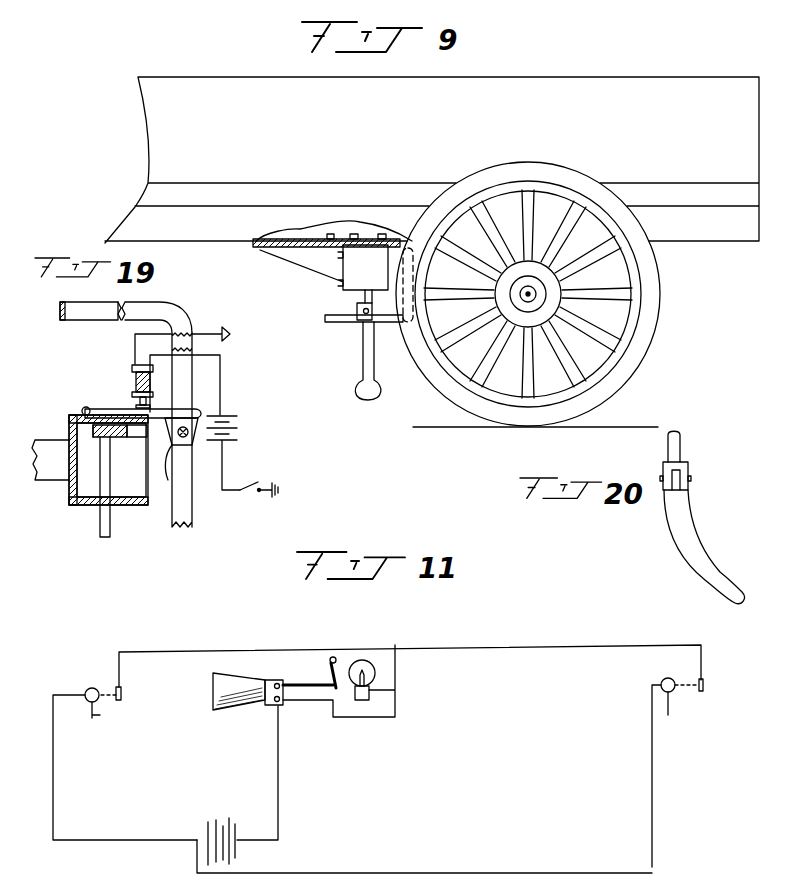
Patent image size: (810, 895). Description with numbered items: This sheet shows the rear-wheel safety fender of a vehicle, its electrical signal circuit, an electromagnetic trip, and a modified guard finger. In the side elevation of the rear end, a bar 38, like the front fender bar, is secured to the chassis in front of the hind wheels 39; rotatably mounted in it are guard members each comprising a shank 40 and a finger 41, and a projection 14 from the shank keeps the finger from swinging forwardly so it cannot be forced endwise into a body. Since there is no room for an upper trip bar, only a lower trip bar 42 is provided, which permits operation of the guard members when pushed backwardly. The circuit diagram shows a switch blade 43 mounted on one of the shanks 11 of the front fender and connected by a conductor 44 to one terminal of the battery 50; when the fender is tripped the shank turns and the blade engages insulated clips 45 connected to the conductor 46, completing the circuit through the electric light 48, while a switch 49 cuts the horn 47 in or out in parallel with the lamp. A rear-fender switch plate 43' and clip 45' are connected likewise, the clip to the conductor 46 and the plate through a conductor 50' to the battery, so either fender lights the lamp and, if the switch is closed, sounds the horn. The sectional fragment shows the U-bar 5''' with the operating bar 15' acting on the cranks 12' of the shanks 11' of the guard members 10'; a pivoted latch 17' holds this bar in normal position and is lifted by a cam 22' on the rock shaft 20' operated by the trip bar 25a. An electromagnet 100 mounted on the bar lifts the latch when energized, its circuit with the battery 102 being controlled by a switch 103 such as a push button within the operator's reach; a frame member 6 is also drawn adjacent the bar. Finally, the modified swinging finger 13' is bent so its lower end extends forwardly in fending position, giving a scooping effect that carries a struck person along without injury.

In FIG. 9, the hind wheels 39 is at (661, 313).
In FIG. 9, the bar 38 is at (360, 270).
In FIG. 9, the shank 40 is at (365, 297).
In FIG. 9, the lower trip bar 42 is at (330, 321).
In FIG. 9, the projection 14 is at (358, 317).
In FIG. 9, the finger 41 is at (370, 363).
In FIG. 19, the trip bar 25a is at (62, 310).
In FIG. 19, the electromagnet 100 is at (128, 370).
In FIG. 19, the guard member 10' is at (167, 389).
In FIG. 19, the cam 22' is at (223, 415).
In FIG. 19, the battery 102 is at (240, 433).
In FIG. 19, the switch 103 is at (250, 492).
In FIG. 19, the rock shaft 20' is at (225, 462).
In FIG. 19, the pivoted latch 17' is at (180, 446).
In FIG. 19, the crank 12' is at (69, 434).
In FIG. 19, the operating bar 15' is at (121, 447).
In FIG. 19, the shank 11' is at (122, 487).
In FIG. 19, the frame member 6 is at (48, 470).
In FIG. 19, the U-bar 5''' is at (88, 470).
In FIG. 20, the swinging finger 13' is at (703, 517).
In FIG. 11, the circuit conductor 46 is at (178, 652).
In FIG. 11, the clips 45 is at (136, 689).
In FIG. 11, the shank 11 is at (85, 679).
In FIG. 11, the switch blade 43 is at (120, 715).
In FIG. 11, the conductor 44 is at (55, 755).
In FIG. 11, the battery 50 is at (424, 789).
In FIG. 11, the horn 47 is at (243, 684).
In FIG. 11, the switch 49 is at (325, 673).
In FIG. 11, the electric light 48 is at (392, 683).
In FIG. 11, the clip 45' is at (715, 677).
In FIG. 11, the switch plate 43' is at (696, 704).
In FIG. 11, the conductor 50' is at (679, 776).